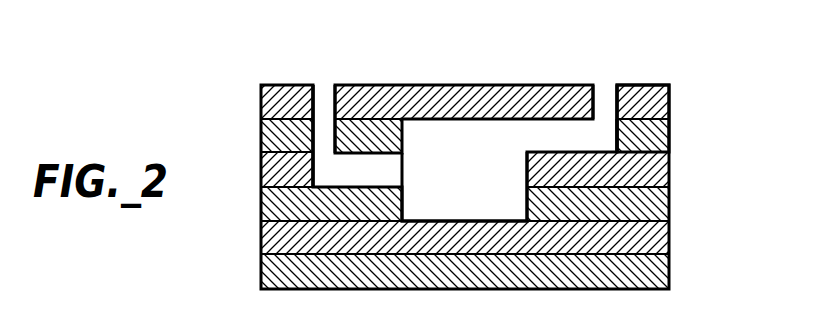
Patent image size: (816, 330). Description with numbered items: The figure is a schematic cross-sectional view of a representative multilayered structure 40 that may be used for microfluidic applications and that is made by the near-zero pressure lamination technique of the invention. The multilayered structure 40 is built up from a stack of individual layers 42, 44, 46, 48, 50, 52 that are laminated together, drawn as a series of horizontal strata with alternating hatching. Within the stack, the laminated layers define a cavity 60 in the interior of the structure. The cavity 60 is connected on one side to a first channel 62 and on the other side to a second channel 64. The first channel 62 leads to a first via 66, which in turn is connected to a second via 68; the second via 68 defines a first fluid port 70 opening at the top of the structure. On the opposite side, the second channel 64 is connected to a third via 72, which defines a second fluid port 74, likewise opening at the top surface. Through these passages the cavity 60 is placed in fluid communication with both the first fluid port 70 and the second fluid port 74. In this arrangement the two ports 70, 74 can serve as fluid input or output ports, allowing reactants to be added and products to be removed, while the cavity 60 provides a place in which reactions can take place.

The multilayered structure 40 is at (215, 50).
The layer 42 is at (261, 100).
The layer 44 is at (261, 130).
The layer 46 is at (261, 177).
The layer 48 is at (261, 205).
The layer 50 is at (261, 240).
The layer 52 is at (261, 275).
The cavity 60 is at (477, 186).
The first channel 62 is at (383, 172).
The second channel 64 is at (617, 130).
The first via 66 is at (313, 142).
The second via 68 is at (338, 90).
The first fluid port 70 is at (322, 85).
The third via 72 is at (619, 92).
The second fluid port 74 is at (605, 82).